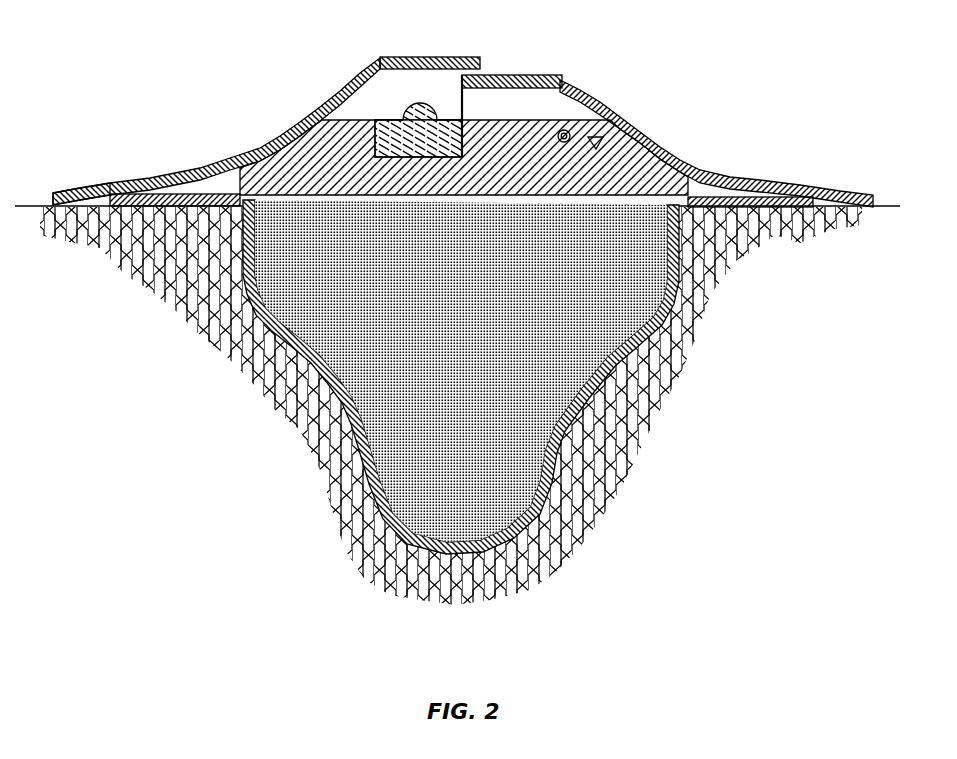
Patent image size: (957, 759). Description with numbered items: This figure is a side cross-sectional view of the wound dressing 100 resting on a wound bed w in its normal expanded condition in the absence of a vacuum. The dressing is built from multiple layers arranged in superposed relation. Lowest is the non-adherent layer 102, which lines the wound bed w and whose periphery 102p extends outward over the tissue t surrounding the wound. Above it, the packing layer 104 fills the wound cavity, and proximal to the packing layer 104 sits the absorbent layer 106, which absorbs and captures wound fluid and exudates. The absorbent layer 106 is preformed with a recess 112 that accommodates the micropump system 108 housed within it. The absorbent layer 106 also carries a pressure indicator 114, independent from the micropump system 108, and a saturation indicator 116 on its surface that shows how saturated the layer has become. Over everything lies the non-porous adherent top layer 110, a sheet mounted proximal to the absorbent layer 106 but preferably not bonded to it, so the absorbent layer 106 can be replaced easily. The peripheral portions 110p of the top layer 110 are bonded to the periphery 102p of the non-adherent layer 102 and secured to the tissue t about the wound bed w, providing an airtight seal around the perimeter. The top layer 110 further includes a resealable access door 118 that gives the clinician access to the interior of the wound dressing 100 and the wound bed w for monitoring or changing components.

The wound dressing 100 is at (283, 434).
The non-adherent layer 102 is at (625, 370).
The periphery of the non-adherent layer 102p is at (770, 198).
The packing layer 104 is at (668, 325).
The absorbent layer 106 is at (240, 172).
The micropump system 108 is at (408, 108).
The adherent top layer 110 is at (283, 128).
The peripheral portions of the top layer 110p is at (147, 187).
The recess 112 is at (468, 125).
The pressure indicator 114 is at (566, 128).
The saturation indicator 116 is at (596, 130).
The access door 118 is at (437, 57).
The tissue t is at (827, 228).
The wound bed w is at (372, 553).